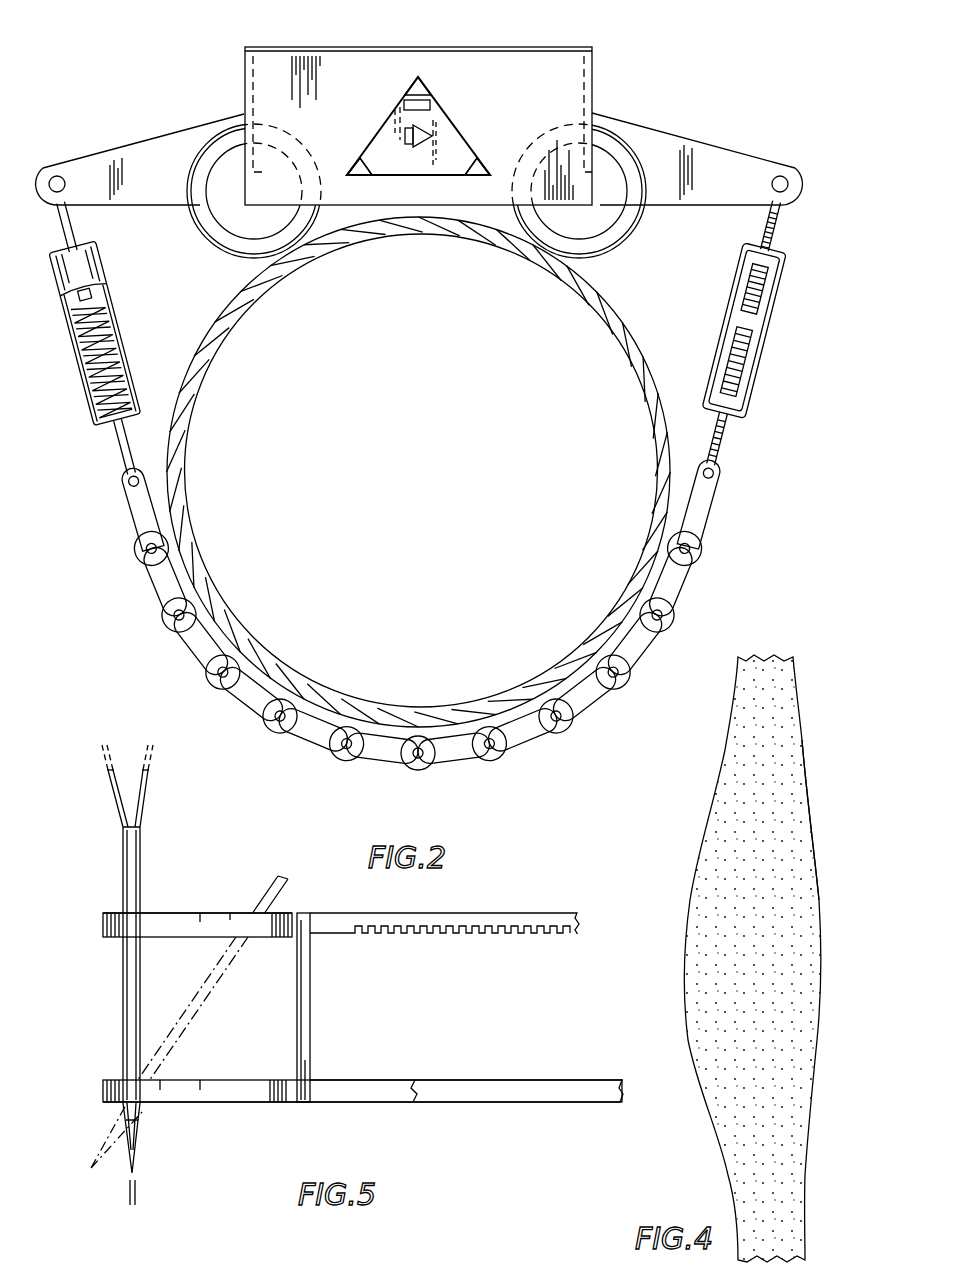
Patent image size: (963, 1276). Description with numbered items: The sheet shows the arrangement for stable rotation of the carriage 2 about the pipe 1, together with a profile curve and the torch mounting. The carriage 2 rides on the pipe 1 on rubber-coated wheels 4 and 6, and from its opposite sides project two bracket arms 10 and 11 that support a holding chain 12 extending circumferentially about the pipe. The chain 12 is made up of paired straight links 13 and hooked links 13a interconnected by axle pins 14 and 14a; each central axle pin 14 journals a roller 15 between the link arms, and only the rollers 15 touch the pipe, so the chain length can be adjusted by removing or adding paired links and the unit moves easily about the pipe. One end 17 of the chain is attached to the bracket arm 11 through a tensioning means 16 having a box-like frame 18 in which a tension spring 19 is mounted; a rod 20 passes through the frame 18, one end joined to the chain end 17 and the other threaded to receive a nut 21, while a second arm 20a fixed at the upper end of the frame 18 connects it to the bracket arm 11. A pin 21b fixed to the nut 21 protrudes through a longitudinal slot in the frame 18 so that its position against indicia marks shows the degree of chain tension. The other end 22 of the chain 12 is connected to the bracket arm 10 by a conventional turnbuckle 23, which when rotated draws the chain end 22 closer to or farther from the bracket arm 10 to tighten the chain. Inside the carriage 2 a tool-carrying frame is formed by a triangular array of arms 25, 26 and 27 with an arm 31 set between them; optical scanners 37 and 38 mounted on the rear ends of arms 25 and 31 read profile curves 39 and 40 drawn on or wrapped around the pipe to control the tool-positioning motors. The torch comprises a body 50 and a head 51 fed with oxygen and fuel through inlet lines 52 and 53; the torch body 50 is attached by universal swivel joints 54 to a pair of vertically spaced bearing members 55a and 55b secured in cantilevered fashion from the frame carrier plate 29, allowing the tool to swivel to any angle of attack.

In FIG. 2, the pipe 1 is at (636, 338).
In FIG. 2, the carriage 2 is at (575, 47).
In FIG. 2, the wheel 4 is at (602, 252).
In FIG. 2, the wheel 6 is at (238, 265).
In FIG. 2, the bracket arm 10 is at (705, 140).
In FIG. 2, the bracket arm 11 is at (190, 125).
In FIG. 2, the chain 12 is at (443, 670).
In FIG. 2, the straight link 13 is at (500, 758).
In FIG. 2, the hooked link 13a is at (688, 605).
In FIG. 2, the axle pin 14 is at (270, 735).
In FIG. 2, the axle pin 14a is at (345, 760).
In FIG. 2, the roller 15 is at (205, 675).
In FIG. 2, the tensioning means 16 is at (106, 346).
In FIG. 2, the end of the chain 17 is at (120, 476).
In FIG. 2, the frame 18 is at (124, 345).
In FIG. 2, the tension spring 19 is at (92, 408).
In FIG. 2, the rod 20 is at (130, 455).
In FIG. 2, the second arm 20a is at (72, 222).
In FIG. 2, the nut 21 is at (62, 290).
In FIG. 2, the pin 21b is at (104, 292).
In FIG. 2, the end of the chain 22 is at (712, 480).
In FIG. 2, the turnbuckle 23 is at (776, 320).
In FIG. 2, the arm 25 is at (418, 77).
In FIG. 5, the arm 25 is at (497, 940).
In FIG. 2, the arm 26 is at (358, 163).
In FIG. 5, the arm 26 is at (393, 1103).
In FIG. 2, the arm 27 is at (488, 165).
In FIG. 5, the arm 27 is at (540, 1103).
In FIG. 5, the frame carrier plate 29 is at (310, 962).
In FIG. 2, the arm 31 is at (432, 138).
In FIG. 2, the optical scanner 37 is at (440, 140).
In FIG. 2, the optical scanner 38 is at (395, 112).
In FIG. 4, the profile curve 39 is at (700, 870).
In FIG. 4, the profile curve 40 is at (815, 870).
In FIG. 5, the torch body 50 is at (121, 1006).
In FIG. 5, the head 51 is at (138, 1160).
In FIG. 5, the inlet line 52 is at (118, 826).
In FIG. 5, the inlet line 53 is at (146, 826).
In FIG. 5, the universal swivel joint 54 is at (103, 912).
In FIG. 5, the bearing member 55a is at (176, 912).
In FIG. 5, the bearing member 55b is at (203, 1103).